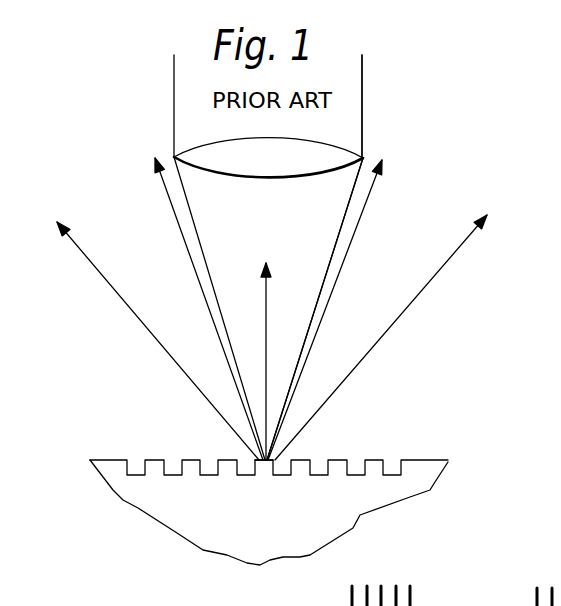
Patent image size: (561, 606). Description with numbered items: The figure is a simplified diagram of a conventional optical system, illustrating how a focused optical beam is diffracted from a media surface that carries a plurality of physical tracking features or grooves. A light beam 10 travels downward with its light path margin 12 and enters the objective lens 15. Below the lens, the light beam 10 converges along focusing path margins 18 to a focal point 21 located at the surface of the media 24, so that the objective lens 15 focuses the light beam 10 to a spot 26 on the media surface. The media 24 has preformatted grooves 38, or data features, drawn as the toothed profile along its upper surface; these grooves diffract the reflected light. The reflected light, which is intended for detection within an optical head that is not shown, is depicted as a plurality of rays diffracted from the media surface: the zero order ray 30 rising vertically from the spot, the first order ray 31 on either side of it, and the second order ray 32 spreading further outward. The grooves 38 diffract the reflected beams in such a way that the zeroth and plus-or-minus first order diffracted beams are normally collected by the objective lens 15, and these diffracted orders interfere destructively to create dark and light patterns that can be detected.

The light beam 10 is at (350, 83).
The light path margin 12 is at (175, 108).
The objective lens 15 is at (232, 168).
The focusing path margins 18 is at (199, 240).
The focal point 21 is at (262, 458).
The media 24 is at (398, 488).
The spot 26 is at (281, 433).
The zero order ray 30 is at (267, 345).
The first order ray 31 is at (164, 183).
The second order ray 32 is at (142, 327).
The preformatted grooves 38 is at (143, 459).